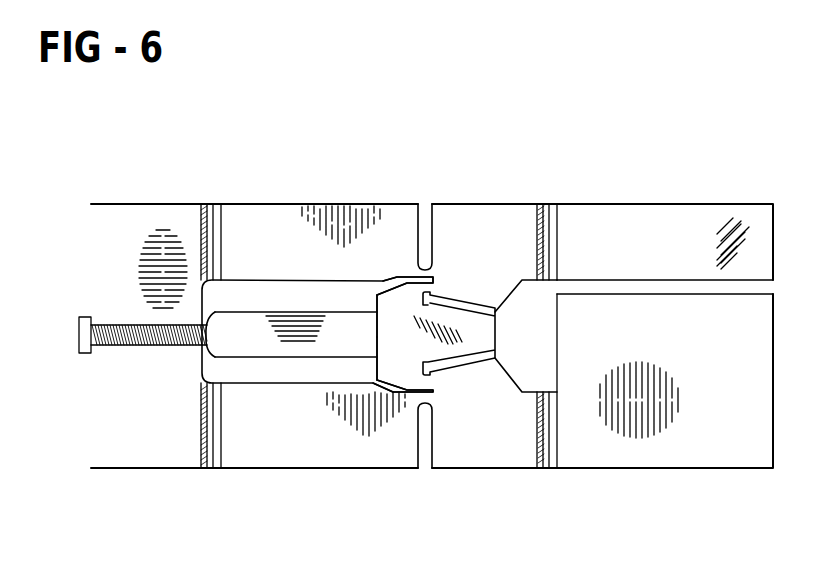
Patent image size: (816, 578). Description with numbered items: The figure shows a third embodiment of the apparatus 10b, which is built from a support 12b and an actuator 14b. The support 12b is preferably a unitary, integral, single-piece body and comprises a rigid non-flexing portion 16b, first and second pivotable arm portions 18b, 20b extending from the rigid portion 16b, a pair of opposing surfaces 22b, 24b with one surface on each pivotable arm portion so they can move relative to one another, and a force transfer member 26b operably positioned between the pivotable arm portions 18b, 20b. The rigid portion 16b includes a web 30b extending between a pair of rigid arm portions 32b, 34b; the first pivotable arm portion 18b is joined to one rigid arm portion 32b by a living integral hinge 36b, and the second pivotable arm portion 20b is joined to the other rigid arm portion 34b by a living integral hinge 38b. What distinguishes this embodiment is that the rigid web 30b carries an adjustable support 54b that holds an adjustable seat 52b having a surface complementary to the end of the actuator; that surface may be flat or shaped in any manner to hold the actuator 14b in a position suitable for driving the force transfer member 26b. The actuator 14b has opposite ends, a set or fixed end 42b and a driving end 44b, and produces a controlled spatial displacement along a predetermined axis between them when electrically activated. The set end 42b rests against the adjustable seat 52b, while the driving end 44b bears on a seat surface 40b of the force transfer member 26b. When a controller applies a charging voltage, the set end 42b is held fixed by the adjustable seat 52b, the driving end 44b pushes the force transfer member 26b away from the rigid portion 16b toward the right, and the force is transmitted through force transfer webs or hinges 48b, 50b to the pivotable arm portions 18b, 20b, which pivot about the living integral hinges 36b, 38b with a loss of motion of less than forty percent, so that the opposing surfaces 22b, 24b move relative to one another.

The apparatus 10b is at (441, 92).
The support 12b is at (317, 156).
The actuator 14b is at (243, 352).
The rigid non-flexing portion 16b is at (163, 190).
The pivotable arm portion 18b is at (633, 217).
The pivotable arm portion 20b is at (583, 457).
The opposing surface 22b is at (703, 283).
The opposing surface 24b is at (600, 296).
The force transfer member 26b is at (475, 335).
The web 30b is at (130, 218).
The rigid arm portion 32b is at (352, 205).
The rigid arm portion 34b is at (246, 450).
The living integral hinge 36b is at (433, 268).
The living integral hinge 38b is at (425, 404).
The seat surface 40b is at (372, 378).
The set end 42b is at (214, 340).
The driving end 44b is at (420, 266).
The force transfer web 48b is at (378, 337).
The force transfer web 50b is at (433, 391).
The adjustable seat 52b is at (205, 352).
The adjustable support 54b is at (135, 325).